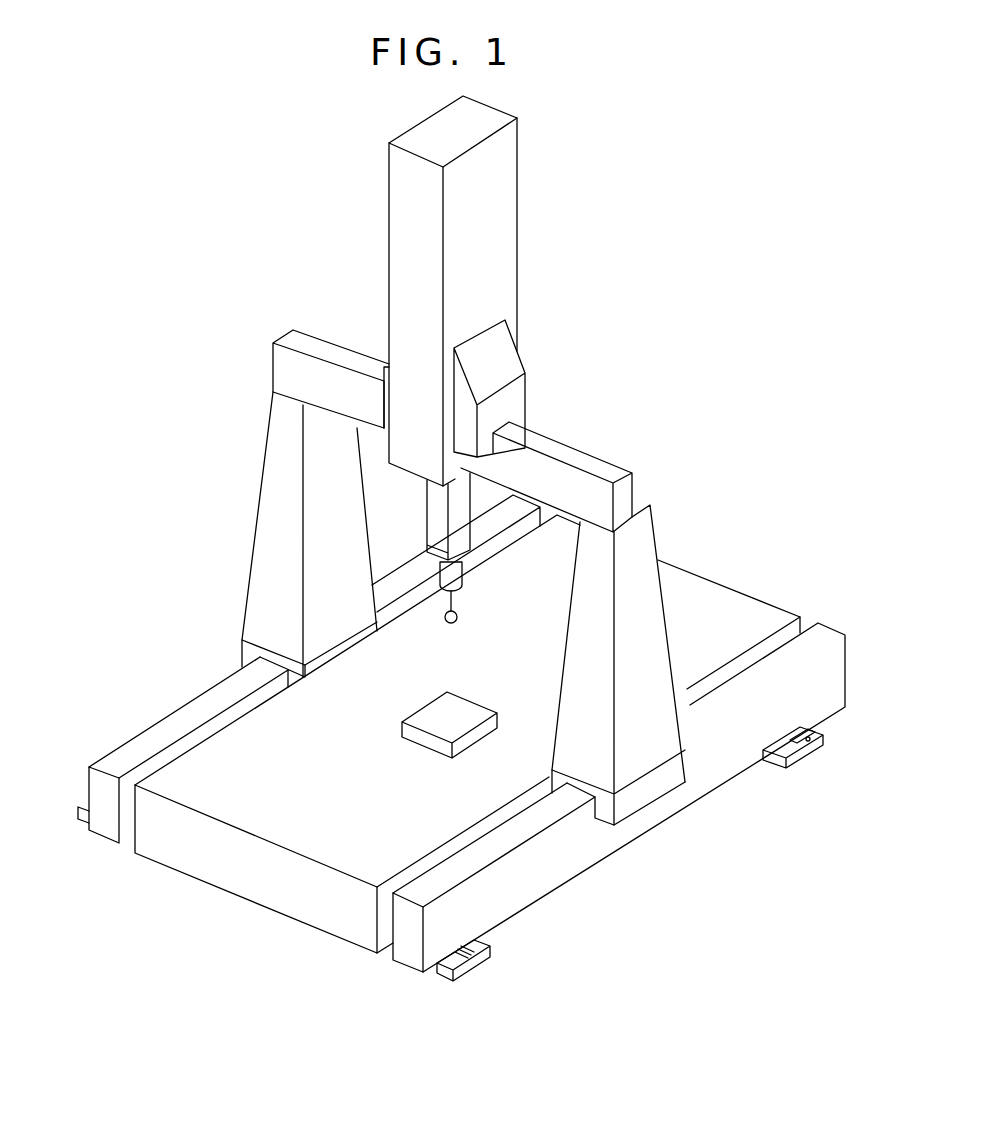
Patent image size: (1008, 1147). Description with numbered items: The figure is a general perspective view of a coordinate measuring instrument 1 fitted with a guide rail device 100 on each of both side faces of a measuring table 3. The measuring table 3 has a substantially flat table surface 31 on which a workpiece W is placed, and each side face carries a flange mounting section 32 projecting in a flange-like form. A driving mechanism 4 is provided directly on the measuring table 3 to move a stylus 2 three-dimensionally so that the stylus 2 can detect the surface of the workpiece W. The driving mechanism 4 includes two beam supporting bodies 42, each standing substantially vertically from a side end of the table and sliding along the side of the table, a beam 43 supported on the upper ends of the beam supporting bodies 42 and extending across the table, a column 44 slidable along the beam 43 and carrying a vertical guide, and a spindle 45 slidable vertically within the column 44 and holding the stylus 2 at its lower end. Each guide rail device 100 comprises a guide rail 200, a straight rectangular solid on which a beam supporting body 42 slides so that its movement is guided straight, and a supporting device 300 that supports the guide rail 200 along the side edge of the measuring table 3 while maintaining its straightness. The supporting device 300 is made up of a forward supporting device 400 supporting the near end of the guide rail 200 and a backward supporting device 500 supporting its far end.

The coordinate measuring instrument 1 is at (561, 242).
The stylus 2 is at (452, 623).
The measuring table 3 is at (735, 600).
The driving mechanism 4 is at (211, 449).
The table surface 31 is at (683, 578).
The flange mounting section 32 is at (133, 828).
The beam supporting body 42 is at (258, 538).
The beam 43 is at (596, 465).
The column 44 is at (410, 236).
The spindle 45 is at (453, 575).
The guide rail device 100 is at (848, 605).
The guide rail 200 is at (842, 677).
The supporting device 300 is at (717, 988).
The forward supporting device 400 is at (489, 967).
The backward supporting device 500 is at (789, 781).
The workpiece W is at (437, 717).